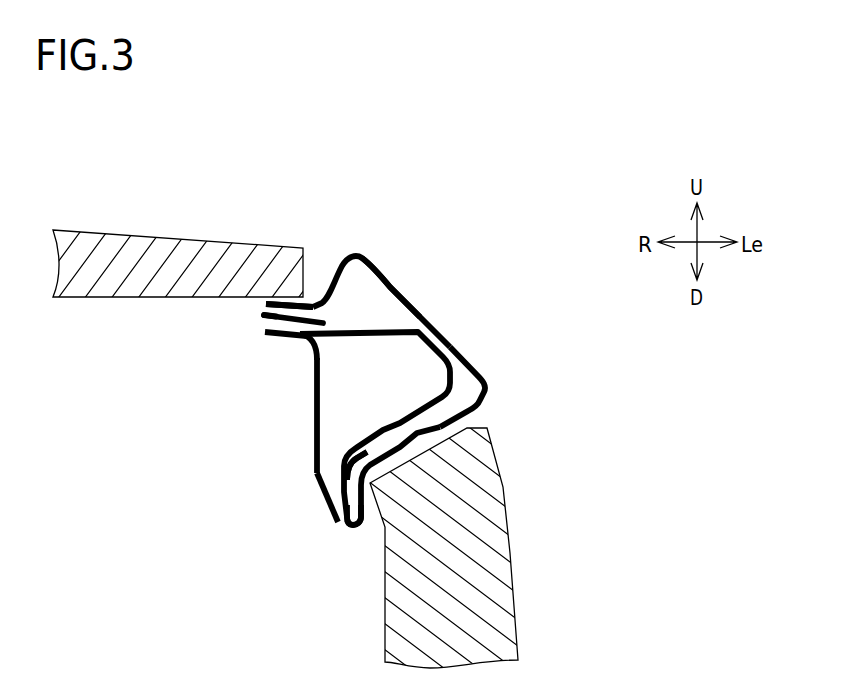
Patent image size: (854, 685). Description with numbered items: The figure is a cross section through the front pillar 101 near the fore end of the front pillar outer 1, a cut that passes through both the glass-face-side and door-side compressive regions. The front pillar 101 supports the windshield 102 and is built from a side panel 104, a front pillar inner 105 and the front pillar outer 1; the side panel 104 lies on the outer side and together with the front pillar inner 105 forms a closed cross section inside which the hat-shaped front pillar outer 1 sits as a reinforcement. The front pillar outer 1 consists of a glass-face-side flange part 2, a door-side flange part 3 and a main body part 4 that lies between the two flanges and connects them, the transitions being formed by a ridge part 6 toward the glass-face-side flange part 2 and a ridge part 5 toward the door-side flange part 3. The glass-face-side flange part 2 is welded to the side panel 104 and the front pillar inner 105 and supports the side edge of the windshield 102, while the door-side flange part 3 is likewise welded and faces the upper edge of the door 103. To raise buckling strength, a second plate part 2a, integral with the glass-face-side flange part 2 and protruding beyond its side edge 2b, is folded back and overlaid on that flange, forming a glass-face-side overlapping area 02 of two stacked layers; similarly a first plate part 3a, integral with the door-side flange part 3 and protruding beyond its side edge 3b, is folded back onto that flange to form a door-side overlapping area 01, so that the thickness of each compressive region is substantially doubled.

The front pillar 101 is at (443, 239).
The windshield 102 is at (150, 243).
The door 103 is at (508, 548).
The side panel 104 is at (404, 274).
The front pillar inner 105 is at (319, 392).
The front pillar outer 1 is at (480, 382).
The glass-face-side flange part 2 is at (278, 332).
The second plate part 2a is at (293, 307).
The glass-face-side overlapping area 02 is at (289, 305).
The side edge of the glass-face-side flange part 2b is at (261, 322).
The door-side flange part 3 is at (343, 512).
The first plate part 3a is at (345, 481).
The door-side overlapping area 01 is at (357, 466).
The side edge of the door-side flange part 3b is at (353, 527).
The main body part 4 is at (444, 355).
The ridge part 5 is at (320, 472).
The ridge part 6 is at (327, 337).